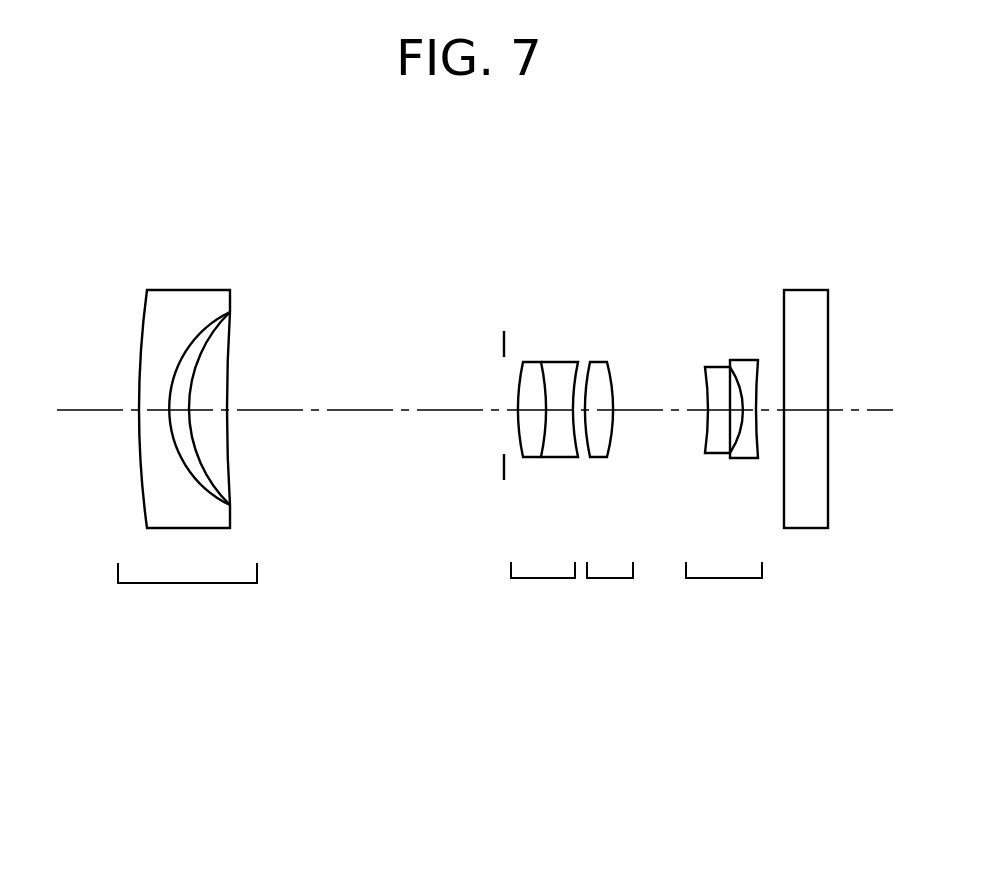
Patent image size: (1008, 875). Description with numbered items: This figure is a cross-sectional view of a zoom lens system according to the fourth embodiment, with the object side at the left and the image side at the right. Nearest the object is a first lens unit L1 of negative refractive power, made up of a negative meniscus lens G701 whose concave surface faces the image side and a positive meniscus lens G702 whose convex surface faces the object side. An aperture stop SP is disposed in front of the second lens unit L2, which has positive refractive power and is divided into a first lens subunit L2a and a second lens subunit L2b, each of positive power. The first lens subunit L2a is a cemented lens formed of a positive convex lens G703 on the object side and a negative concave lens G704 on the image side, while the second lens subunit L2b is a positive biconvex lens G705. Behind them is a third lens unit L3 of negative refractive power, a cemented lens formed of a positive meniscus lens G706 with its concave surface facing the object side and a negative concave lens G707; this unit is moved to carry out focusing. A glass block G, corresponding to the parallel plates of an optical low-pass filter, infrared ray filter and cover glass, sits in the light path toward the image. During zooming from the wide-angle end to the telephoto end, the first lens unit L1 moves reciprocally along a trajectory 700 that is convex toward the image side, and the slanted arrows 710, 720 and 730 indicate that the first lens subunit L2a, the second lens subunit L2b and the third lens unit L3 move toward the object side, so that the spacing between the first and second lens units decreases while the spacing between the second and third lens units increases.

The first lens unit L1 is at (253, 215).
The second lens unit L2 is at (634, 215).
The first lens subunit L2a is at (576, 268).
The second lens subunit L2b is at (634, 268).
The third lens unit L3 is at (759, 215).
The aperture stop SP is at (503, 337).
The glass block G is at (816, 290).
The negative meniscus lens G701 is at (173, 528).
The positive meniscus lens G702 is at (230, 505).
The positive convex lens G703 is at (533, 457).
The negative concave lens G704 is at (563, 457).
The positive biconvex lens G705 is at (600, 457).
The positive meniscus lens G706 is at (717, 453).
The negative concave lens G707 is at (743, 458).
The trajectory of the first lens unit 700 is at (183, 583).
The movement of the first lens subunit 710 is at (543, 578).
The movement of the second lens subunit 720 is at (605, 578).
The movement of the third lens unit 730 is at (728, 578).